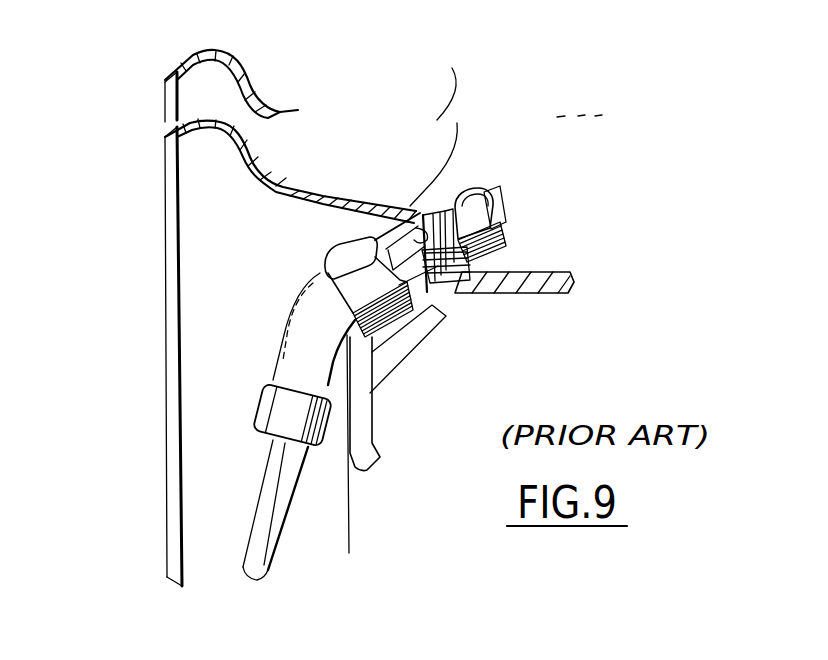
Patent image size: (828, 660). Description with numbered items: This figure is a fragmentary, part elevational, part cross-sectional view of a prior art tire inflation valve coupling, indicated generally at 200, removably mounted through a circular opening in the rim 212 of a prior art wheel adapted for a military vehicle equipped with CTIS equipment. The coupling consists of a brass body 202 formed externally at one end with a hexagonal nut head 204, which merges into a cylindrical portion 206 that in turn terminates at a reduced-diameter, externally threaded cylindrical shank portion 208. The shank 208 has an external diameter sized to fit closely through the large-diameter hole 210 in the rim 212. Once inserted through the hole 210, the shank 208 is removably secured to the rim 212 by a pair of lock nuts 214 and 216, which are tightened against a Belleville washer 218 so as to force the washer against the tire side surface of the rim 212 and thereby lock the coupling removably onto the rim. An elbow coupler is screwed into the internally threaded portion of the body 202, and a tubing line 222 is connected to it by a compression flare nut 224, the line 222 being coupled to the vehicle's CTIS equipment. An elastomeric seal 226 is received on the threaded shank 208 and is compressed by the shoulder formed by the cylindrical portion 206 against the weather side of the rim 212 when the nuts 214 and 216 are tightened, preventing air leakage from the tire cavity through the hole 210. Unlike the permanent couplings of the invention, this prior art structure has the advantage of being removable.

The prior art tire inflation coupling 200 is at (477, 85).
The brass body 202 is at (327, 120).
The hexagonal nut head 204 is at (327, 262).
The cylindrical portion 206 is at (446, 114).
The externally threaded cylindrical shank portion 208 is at (452, 286).
The hole 210 is at (418, 215).
The rim 212 is at (187, 53).
The lock nut 214 is at (503, 232).
The lock nut 216 is at (500, 203).
The Belleville washer 218 is at (470, 120).
The tubing line 222 is at (257, 504).
The compression flare nut 224 is at (260, 421).
The elastomeric seal 226 is at (440, 287).